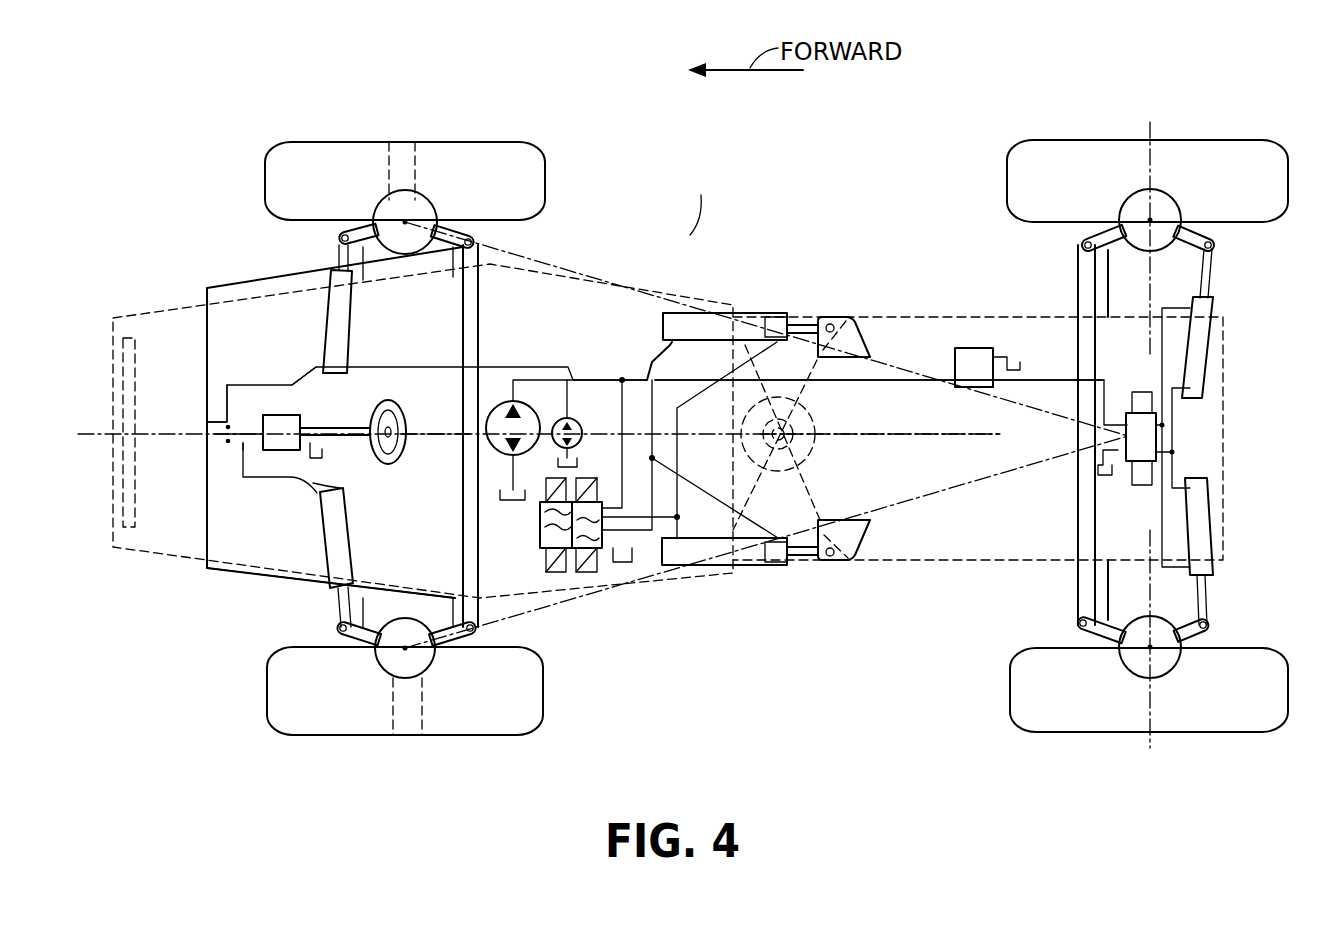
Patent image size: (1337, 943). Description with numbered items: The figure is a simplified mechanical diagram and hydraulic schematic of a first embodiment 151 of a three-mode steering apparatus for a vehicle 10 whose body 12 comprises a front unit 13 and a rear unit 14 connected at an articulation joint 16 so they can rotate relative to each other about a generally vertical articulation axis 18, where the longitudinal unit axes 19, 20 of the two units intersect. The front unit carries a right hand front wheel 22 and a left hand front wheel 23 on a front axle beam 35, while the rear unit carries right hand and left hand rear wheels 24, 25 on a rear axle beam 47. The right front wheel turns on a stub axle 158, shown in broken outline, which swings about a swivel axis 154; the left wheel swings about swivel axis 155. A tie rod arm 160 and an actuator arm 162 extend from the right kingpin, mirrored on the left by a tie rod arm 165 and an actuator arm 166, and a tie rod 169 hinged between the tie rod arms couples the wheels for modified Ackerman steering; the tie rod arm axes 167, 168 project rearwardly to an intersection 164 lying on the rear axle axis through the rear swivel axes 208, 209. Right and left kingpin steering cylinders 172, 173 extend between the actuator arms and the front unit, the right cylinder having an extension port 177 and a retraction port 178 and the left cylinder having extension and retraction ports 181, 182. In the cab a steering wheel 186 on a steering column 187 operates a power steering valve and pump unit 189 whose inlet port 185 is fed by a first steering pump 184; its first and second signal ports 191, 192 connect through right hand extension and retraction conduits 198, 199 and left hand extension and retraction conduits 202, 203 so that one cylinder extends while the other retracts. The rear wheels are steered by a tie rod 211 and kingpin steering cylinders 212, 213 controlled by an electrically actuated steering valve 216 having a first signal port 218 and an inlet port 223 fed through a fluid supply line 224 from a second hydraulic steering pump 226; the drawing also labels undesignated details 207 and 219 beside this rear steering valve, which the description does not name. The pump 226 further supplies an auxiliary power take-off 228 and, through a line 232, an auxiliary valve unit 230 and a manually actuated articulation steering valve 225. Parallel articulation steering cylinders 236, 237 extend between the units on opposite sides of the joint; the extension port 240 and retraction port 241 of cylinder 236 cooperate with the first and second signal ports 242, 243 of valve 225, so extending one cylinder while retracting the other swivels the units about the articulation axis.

The vehicle 10 is at (684, 247).
The body 12 is at (695, 215).
The front unit 13 is at (180, 305).
The rear unit 14 is at (992, 567).
The articulation joint 16 is at (790, 420).
The articulation axis 18 is at (800, 445).
The longitudinal unit axis 19 is at (443, 438).
The longitudinal unit axis 20 is at (973, 437).
The right hand front wheel 22 is at (328, 157).
The left hand front wheel 23 is at (528, 690).
The right hand rear wheel 24 is at (1110, 148).
The left hand rear wheel 25 is at (1030, 691).
The front axle beam 35 is at (394, 262).
The rear axle beam 47 is at (1122, 282).
The first embodiment of three-mode steering apparatus 151 is at (588, 266).
The swivel axis 154 is at (405, 222).
The swivel axis 155 is at (407, 652).
The stub axle 158 is at (385, 158).
The tie rod arm 160 is at (450, 228).
The actuator arm 162 is at (363, 228).
The intersection 164 is at (1125, 437).
The left hand tie rod arm 165 is at (447, 648).
The left hand actuator arm 166 is at (357, 633).
The tie rod arm axis 167 is at (903, 350).
The tie rod arm axis 168 is at (899, 514).
The tie rod 169 is at (478, 316).
The right hand hydraulic kingpin steering cylinder 172 is at (335, 322).
The left hand hydraulic kingpin steering cylinder 173 is at (330, 553).
The extension port 177 is at (325, 365).
The retraction port 178 is at (333, 263).
The extension port 181 is at (315, 483).
The retraction port 182 is at (330, 595).
The first steering pump 184 is at (583, 425).
The inlet port 185 is at (303, 422).
The steering wheel 186 is at (412, 418).
The steering column 187 is at (345, 438).
The power steering valve and pump unit 189 is at (240, 453).
The first signal port 191 is at (263, 421).
The second signal port 192 is at (273, 480).
The right hand extension conduit 198 is at (307, 380).
The right hand retraction conduit 199 is at (207, 348).
The left hand extension conduit 202 is at (245, 458).
The left hand retraction conduit 203 is at (250, 580).
The lower pivot bearing 207 is at (1140, 525).
The swivel axis 208 is at (1152, 218).
The swivel axis 209 is at (1153, 650).
The tie rod 211 is at (1075, 505).
The right hand kingpin steering cylinder 212 is at (1200, 345).
The left hand kingpin steering cylinder 213 is at (1200, 497).
The electrically actuated steering valve 216 is at (1193, 435).
The first signal port 218 is at (1165, 420).
The link pin 219 is at (1175, 452).
The inlet port 223 is at (1134, 392).
The fluid supply line 224 is at (910, 380).
The articulation steering valve 225 is at (605, 562).
The second hydraulic steering pump 226 is at (529, 440).
The auxiliary power take-off 228 is at (973, 348).
The auxiliary valve unit 230 is at (547, 540).
The line 232 is at (617, 437).
The right hand hydraulic articulation steering cylinder 236 is at (748, 312).
The left hand hydraulic articulation steering cylinder 237 is at (768, 568).
The extension port 240 is at (670, 347).
The retraction port 241 is at (757, 313).
The first signal port 242 is at (546, 507).
The second signal port 243 is at (546, 540).